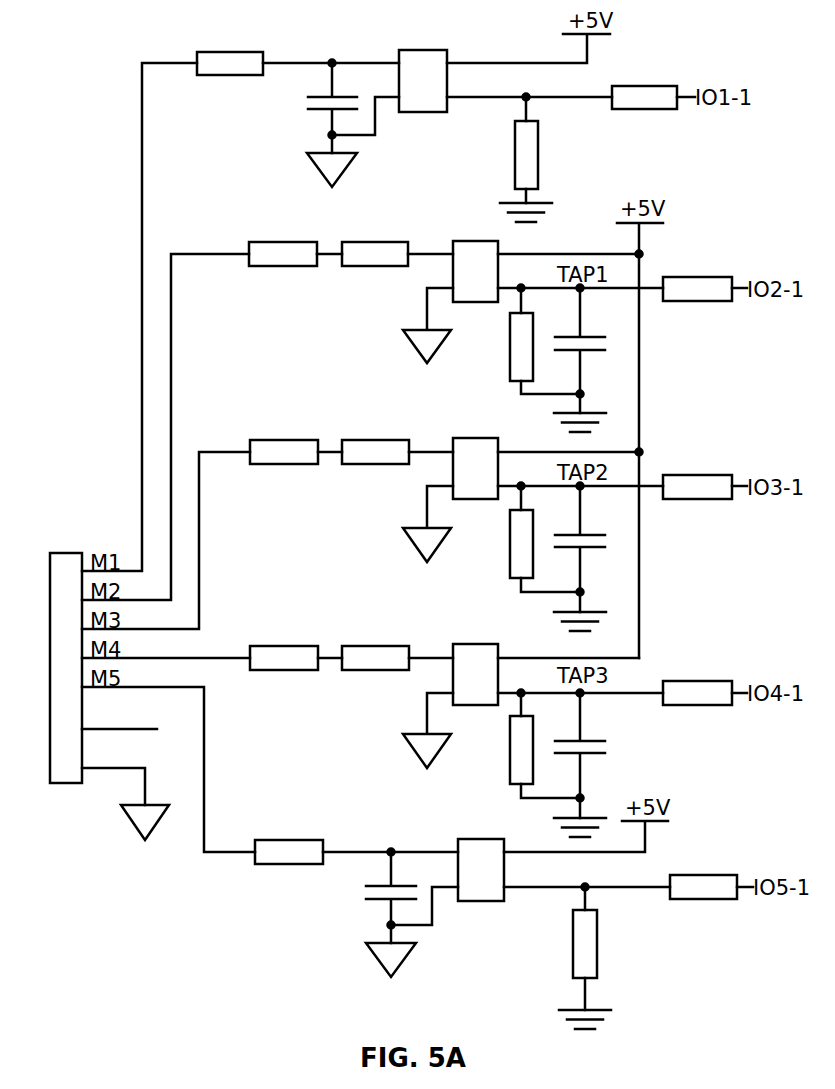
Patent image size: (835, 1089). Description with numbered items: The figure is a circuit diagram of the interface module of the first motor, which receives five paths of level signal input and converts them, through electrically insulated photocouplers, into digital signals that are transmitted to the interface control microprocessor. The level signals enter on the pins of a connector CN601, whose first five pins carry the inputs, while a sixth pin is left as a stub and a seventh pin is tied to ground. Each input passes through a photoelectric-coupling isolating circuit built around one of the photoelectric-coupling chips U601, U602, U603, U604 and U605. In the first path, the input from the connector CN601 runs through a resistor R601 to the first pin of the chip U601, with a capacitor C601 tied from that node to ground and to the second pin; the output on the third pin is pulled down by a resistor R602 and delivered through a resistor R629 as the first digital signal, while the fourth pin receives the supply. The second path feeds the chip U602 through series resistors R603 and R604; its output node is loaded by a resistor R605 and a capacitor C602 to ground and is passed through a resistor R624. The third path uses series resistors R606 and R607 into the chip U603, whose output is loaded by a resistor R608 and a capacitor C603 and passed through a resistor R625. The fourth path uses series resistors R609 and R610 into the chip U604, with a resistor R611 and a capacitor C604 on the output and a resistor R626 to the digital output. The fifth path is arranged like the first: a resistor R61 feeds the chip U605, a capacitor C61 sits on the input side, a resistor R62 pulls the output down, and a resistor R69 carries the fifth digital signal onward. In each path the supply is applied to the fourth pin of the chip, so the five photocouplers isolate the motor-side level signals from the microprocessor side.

The connector CN601 is at (65, 653).
The resistor R601 is at (230, 50).
The capacitor C601 is at (314, 108).
The photoelectric-coupling chip U601 is at (422, 68).
The resistor R602 is at (497, 150).
The resistor R629 is at (644, 84).
The resistor R603 is at (283, 241).
The resistor R604 is at (375, 241).
The photoelectric-coupling chip U602 is at (477, 258).
The resistor R605 is at (515, 341).
The capacitor C602 is at (597, 350).
The resistor R624 is at (697, 276).
The resistor R606 is at (284, 440).
The resistor R607 is at (375, 440).
The photoelectric-coupling chip U603 is at (477, 455).
The resistor R608 is at (515, 539).
The capacitor C603 is at (597, 549).
The resistor R625 is at (697, 474).
The resistor R609 is at (284, 645).
The resistor R610 is at (375, 645).
The photoelectric-coupling chip U604 is at (477, 662).
The resistor R611 is at (515, 745).
The capacitor C604 is at (597, 755).
The resistor R626 is at (697, 679).
The resistor R61 is at (289, 840).
The capacitor C61 is at (379, 897).
The photoelectric-coupling chip U605 is at (486, 857).
The resistor R62 is at (562, 948).
The resistor R69 is at (703, 873).